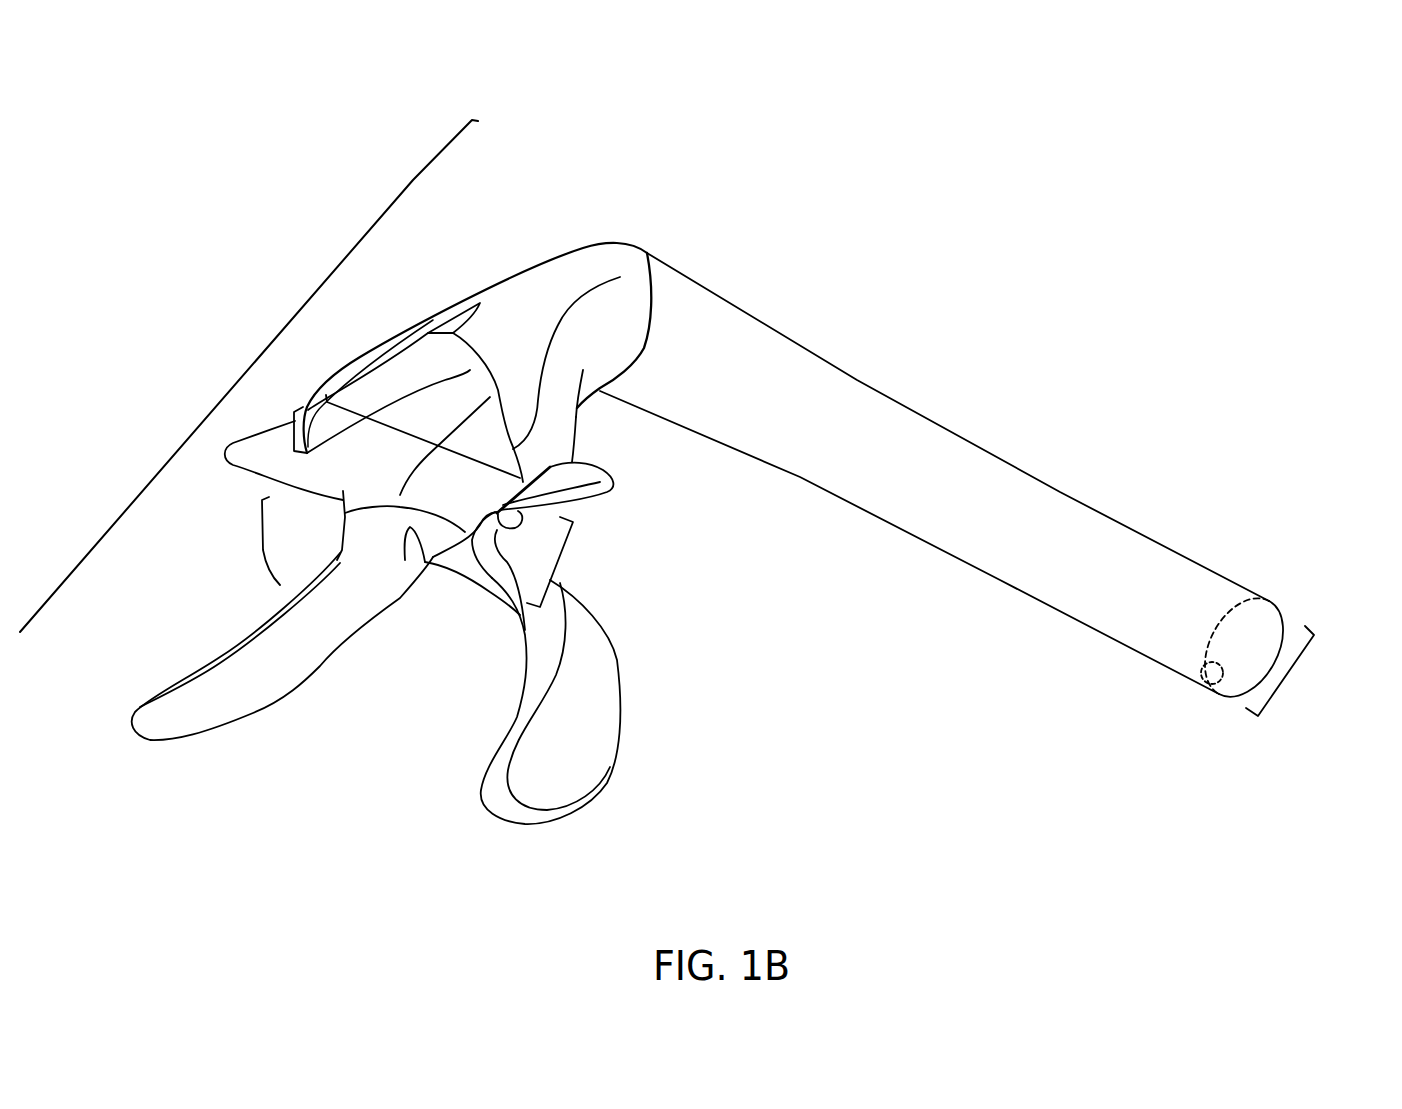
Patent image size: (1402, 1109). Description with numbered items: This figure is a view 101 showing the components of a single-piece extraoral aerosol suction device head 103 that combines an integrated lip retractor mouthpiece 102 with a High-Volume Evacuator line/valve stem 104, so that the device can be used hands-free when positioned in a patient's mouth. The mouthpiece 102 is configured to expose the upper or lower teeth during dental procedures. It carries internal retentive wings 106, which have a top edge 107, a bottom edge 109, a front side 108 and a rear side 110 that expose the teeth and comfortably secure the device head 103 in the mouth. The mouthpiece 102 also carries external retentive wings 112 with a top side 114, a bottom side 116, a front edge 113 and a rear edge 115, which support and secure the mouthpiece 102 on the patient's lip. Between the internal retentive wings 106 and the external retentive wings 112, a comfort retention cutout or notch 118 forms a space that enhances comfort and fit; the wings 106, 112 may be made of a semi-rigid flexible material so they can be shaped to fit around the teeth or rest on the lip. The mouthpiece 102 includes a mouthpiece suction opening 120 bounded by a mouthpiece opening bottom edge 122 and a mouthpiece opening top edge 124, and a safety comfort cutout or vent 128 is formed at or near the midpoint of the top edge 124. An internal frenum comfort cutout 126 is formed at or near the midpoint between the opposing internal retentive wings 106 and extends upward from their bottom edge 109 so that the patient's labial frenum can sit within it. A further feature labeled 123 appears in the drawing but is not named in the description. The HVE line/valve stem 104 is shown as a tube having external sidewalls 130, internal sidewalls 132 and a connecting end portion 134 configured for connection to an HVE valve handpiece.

The view 101 is at (950, 224).
The integrated lip retractor mouthpiece 102 is at (243, 376).
The single-piece extraoral aerosol suction device head 103 is at (281, 175).
The HVE line/valve stem 104 is at (986, 452).
The internal retentive wings 106 is at (217, 718).
The top edge 107 is at (520, 703).
The front side 108 is at (250, 679).
The bottom edge 109 is at (520, 620).
The rear side 110 is at (593, 717).
The external retentive wings 112 is at (233, 465).
The front edge 113 is at (490, 512).
The top side 114 is at (603, 481).
The rear edge 115 is at (592, 465).
The bottom side 116 is at (593, 509).
The comfort retention cutout/notch 118 is at (260, 543).
The mouthpiece suction opening 120 is at (347, 482).
The mouthpiece opening bottom edge 122 is at (233, 443).
The blade 123 is at (306, 405).
The mouthpiece opening top edge 124 is at (493, 373).
The internal frenum comfort cutout 126 is at (423, 562).
The safety comfort cutout/vent 128 is at (443, 318).
The external sidewalls 130 is at (992, 551).
The internal sidewalls 132 is at (1223, 687).
The HVE line/valve stem connecting end portion 134 is at (1287, 677).